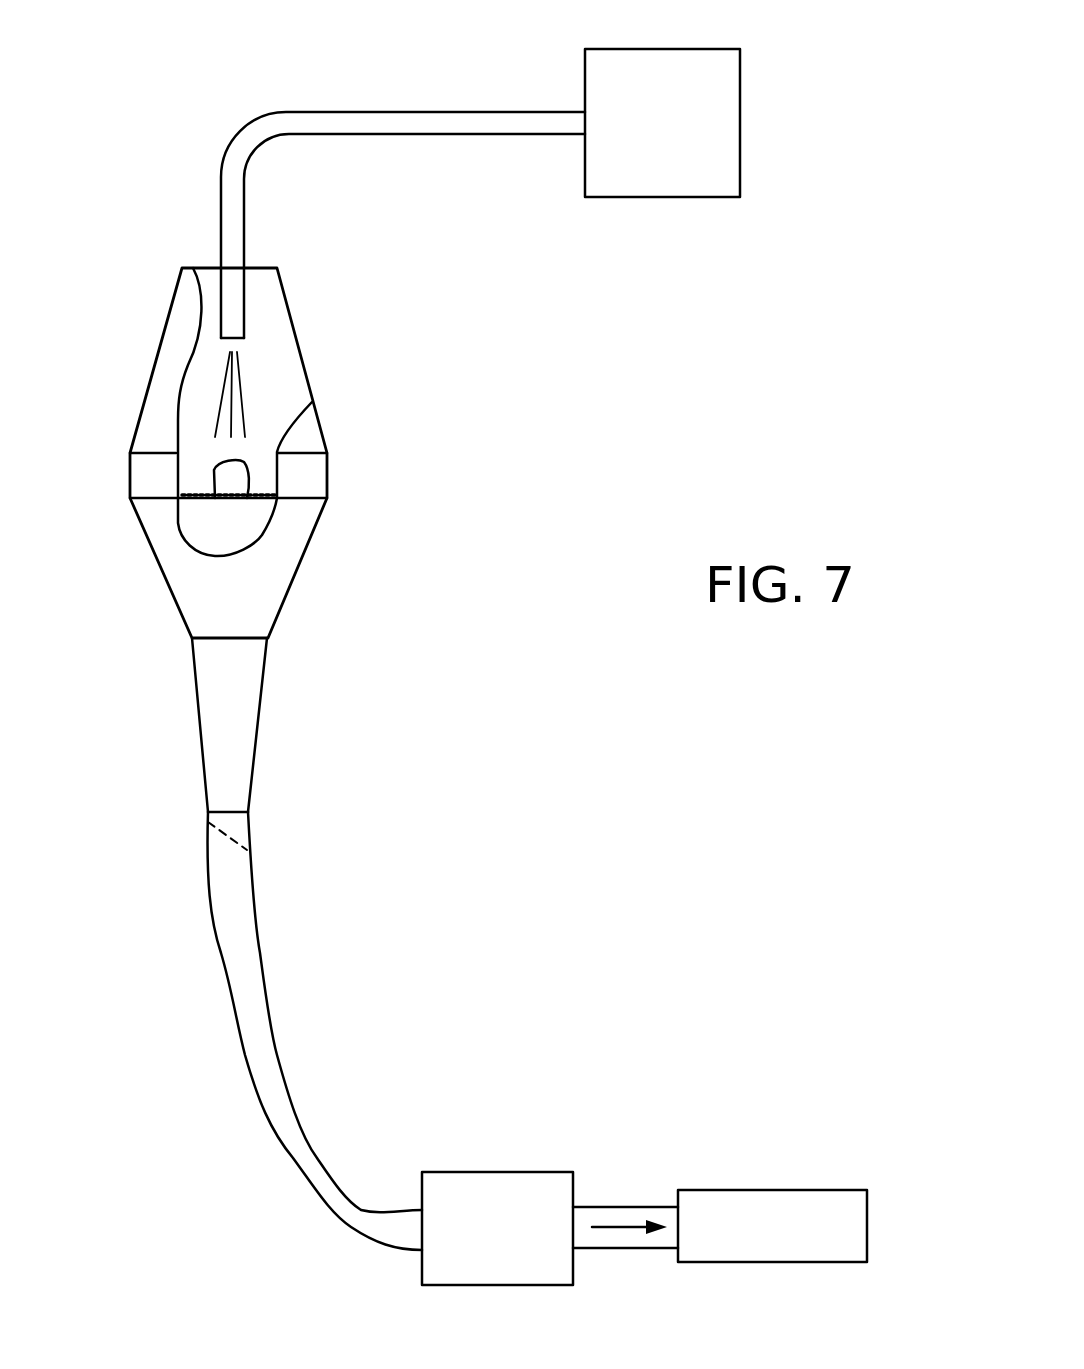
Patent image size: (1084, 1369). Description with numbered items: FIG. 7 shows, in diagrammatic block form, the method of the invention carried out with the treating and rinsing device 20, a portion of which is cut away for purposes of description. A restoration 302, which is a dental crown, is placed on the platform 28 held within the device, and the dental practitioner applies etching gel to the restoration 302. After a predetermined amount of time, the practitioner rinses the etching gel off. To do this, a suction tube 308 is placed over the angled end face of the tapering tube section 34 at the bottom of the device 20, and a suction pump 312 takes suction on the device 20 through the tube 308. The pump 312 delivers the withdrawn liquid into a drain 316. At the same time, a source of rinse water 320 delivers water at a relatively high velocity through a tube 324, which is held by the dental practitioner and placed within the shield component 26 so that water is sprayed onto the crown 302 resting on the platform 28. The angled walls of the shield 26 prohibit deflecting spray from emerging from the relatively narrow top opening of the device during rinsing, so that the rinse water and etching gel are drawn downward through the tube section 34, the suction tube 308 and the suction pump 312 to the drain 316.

The treating and rinsing device 20 is at (320, 310).
The shield component 26 is at (163, 333).
The platform component 28 is at (232, 497).
The tube section 34 is at (260, 722).
The restoration 302 is at (244, 462).
The suction tube 308 is at (250, 823).
The suction pump 312 is at (497, 1172).
The drain 316 is at (787, 1190).
The source of rinse water 320 is at (637, 49).
The tube 324 is at (382, 112).